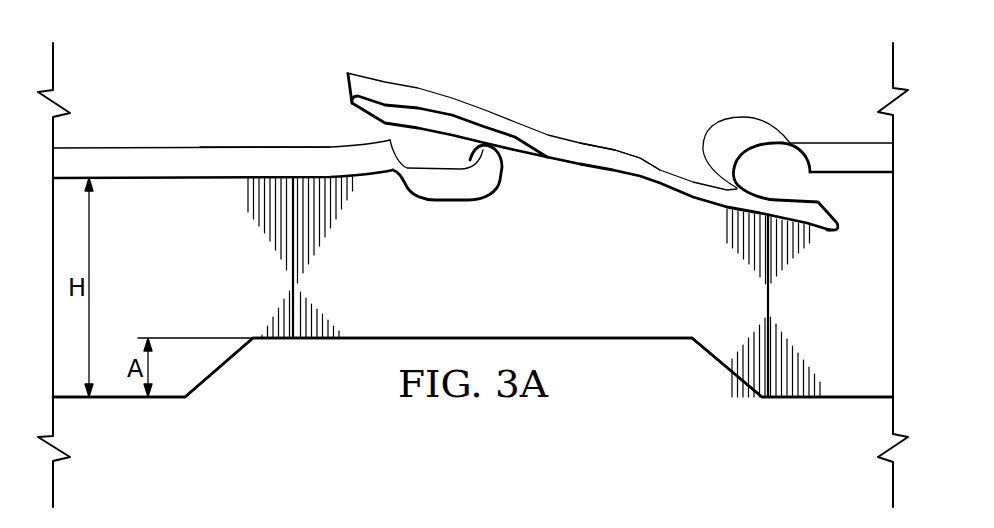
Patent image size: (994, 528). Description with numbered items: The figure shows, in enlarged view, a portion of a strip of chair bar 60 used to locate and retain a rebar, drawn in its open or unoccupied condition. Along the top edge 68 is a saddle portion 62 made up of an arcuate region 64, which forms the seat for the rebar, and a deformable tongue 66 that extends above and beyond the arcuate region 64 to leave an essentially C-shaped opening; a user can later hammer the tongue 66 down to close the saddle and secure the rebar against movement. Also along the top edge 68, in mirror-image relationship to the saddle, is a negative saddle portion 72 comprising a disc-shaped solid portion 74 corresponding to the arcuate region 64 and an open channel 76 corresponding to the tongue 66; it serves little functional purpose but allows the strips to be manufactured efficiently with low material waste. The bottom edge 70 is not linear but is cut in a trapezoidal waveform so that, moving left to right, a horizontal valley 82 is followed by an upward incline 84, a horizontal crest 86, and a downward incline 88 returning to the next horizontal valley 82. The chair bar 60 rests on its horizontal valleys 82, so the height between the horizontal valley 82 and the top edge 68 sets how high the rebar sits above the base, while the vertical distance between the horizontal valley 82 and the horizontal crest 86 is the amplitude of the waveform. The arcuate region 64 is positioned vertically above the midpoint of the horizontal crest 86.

The chair bar 60 is at (172, 123).
The saddle portion 62 is at (467, 77).
The arcuate region 64 is at (462, 177).
The deformable tongue 66 is at (388, 82).
The top edge 68 is at (252, 160).
The bottom edge 70 is at (160, 397).
The negative saddle portion 72 is at (645, 147).
The disc-shaped solid portion 74 is at (770, 153).
The open channel 76 is at (710, 193).
The horizontal valley 82 is at (110, 397).
The upward incline 84 is at (220, 367).
The horizontal crest 86 is at (597, 337).
The downward incline 88 is at (725, 367).